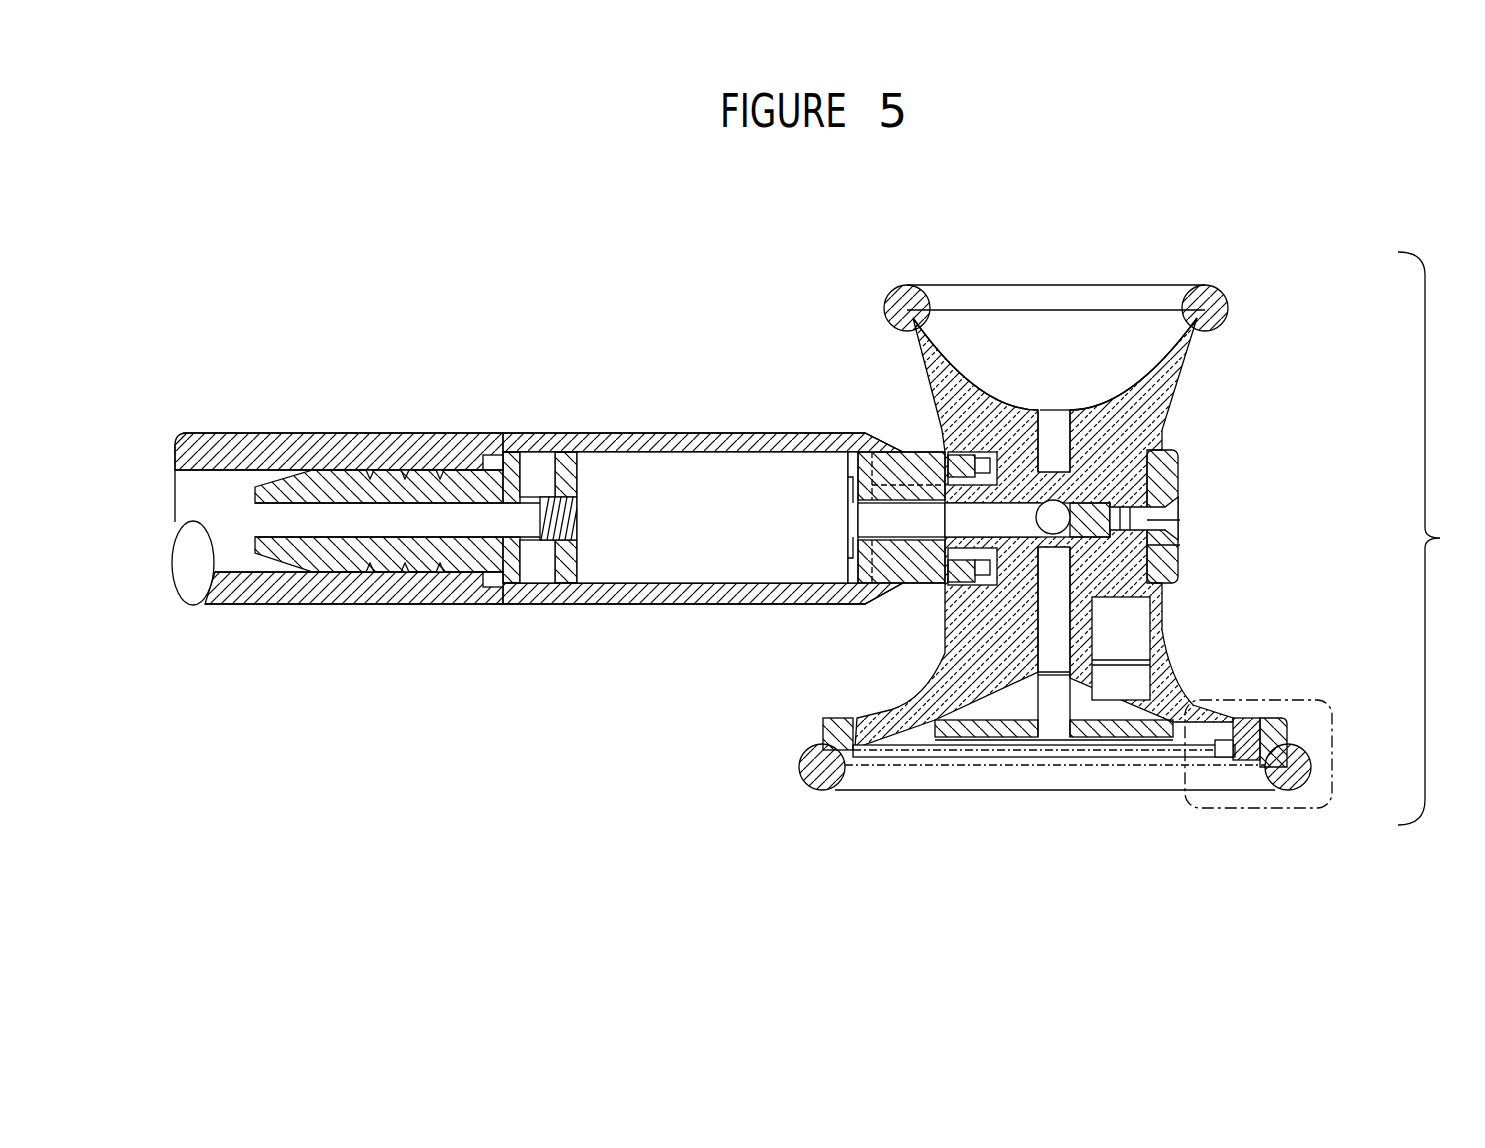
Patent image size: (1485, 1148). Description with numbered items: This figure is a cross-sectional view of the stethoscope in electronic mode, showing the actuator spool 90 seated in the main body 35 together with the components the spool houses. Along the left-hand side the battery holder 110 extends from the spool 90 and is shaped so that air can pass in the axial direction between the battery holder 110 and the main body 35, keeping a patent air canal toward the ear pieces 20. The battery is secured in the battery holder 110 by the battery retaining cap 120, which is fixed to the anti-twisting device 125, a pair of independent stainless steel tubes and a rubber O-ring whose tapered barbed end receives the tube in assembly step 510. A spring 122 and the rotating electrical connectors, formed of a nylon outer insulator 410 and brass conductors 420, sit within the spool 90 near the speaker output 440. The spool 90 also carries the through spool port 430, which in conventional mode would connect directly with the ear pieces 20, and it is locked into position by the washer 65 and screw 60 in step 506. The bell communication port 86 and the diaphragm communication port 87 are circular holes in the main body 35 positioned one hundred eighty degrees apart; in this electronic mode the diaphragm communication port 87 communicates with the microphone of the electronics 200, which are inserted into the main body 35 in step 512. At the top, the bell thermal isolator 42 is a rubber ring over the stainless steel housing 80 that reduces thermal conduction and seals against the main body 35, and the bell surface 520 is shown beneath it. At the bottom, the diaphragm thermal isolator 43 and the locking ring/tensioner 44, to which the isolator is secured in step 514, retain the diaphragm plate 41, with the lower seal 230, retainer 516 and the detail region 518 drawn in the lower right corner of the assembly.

The battery holder 110 is at (697, 588).
The step of forcing tube over anti-twisting device 510 is at (365, 435).
The anti-twisting device 125 is at (287, 563).
The battery retaining cap 120 is at (497, 608).
The spring 122 is at (562, 495).
The stainless steel housing 80 is at (1178, 407).
The speaker output 440 is at (950, 462).
The brass conductors 420 is at (968, 463).
The nylon outer insulator 410 is at (1033, 493).
The lower seal 230 is at (973, 577).
The through spool port 430 is at (1013, 575).
The actuator spool 90 is at (1085, 462).
The bell communication port 86 is at (1050, 397).
The diaphragm communication port 87 is at (1050, 677).
The washer 65 is at (1182, 462).
The screw 60 is at (1182, 500).
The step of locking spool with washer and screw 506 is at (1152, 552).
The ear pieces 20 is at (1150, 622).
The bell thermal isolator 42 is at (1212, 282).
The cup surface 520 is at (1193, 355).
The electronics 200 is at (1085, 742).
The diaphragm plate 41 is at (1203, 753).
The step of inserting electronics 512 is at (1188, 745).
The diaphragm thermal isolator 43 is at (795, 775).
The locking ring/tensioner 44 is at (1285, 715).
The step of securing thermal isolator to locking ring 514 is at (1290, 735).
The retainer 516 is at (1222, 748).
The detail area 518 is at (1310, 808).
The main body 35 is at (1435, 538).